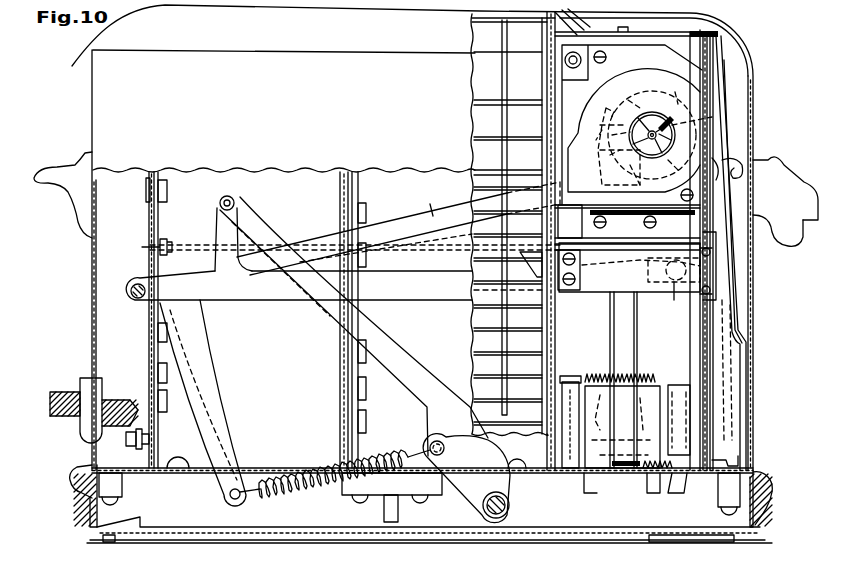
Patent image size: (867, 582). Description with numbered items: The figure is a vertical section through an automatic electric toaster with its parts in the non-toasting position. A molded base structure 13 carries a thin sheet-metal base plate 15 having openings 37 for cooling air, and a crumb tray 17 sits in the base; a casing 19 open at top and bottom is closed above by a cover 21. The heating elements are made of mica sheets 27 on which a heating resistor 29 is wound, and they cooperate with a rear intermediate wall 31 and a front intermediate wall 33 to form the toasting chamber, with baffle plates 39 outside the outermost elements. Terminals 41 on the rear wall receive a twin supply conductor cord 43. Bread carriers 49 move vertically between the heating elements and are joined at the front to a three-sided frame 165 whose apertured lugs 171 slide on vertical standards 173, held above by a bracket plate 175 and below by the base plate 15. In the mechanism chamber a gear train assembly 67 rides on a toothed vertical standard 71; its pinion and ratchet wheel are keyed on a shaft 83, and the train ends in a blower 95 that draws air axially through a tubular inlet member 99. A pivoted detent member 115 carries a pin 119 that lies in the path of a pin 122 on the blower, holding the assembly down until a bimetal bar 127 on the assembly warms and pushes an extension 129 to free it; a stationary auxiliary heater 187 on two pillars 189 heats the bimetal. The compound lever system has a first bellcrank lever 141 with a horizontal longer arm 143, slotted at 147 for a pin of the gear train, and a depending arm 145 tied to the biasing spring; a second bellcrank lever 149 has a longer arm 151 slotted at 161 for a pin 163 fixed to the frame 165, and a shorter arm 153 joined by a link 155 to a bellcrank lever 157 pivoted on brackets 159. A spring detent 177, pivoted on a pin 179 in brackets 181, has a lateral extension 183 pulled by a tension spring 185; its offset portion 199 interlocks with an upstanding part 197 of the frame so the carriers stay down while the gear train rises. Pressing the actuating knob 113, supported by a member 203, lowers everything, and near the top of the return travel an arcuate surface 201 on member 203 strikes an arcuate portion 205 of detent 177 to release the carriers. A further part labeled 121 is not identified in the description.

The base structure 13 is at (88, 503).
The base plate 15 is at (135, 475).
The crumb tray 17 is at (245, 541).
The casing 19 is at (100, 90).
The cover 21 is at (402, 237).
The sheets of electric insulating material 27 is at (197, 171).
The heating resistor 29 is at (168, 187).
The rear intermediate wall 31 is at (148, 192).
The front intermediate wall 33 is at (550, 80).
The openings 37 is at (200, 474).
The baffle plates 39 is at (548, 62).
The terminals 41 is at (125, 443).
The twin supply conductor cord 43 is at (57, 389).
The bread carriers 49 is at (386, 252).
The gear train assembly 67 is at (550, 105).
The vertical standard 71 is at (609, 331).
The shaft 83 is at (665, 126).
The blower 95 is at (722, 84).
The tubular inlet member 99 is at (658, 134).
The actuating knob 113 is at (778, 218).
The detent member 115 is at (588, 200).
The pin 119 is at (606, 107).
The mounting plate 121 is at (627, 221).
The pin 122 is at (654, 93).
The bimetallic element 127 is at (630, 238).
The extension 129 is at (610, 190).
The first bellcrank lever 141 is at (383, 212).
The longer arm 143 is at (440, 207).
The depending arm 145 is at (215, 383).
The slot 147 is at (492, 185).
The second bellcrank lever 149 is at (380, 300).
The longer arm 151 is at (265, 304).
The shorter arm 153 is at (221, 232).
The link 155 is at (423, 378).
The bellcrank lever 157 is at (507, 488).
The brackets 159 is at (473, 491).
The slot 161 is at (652, 290).
The pin 163 is at (674, 300).
The frame 165 is at (600, 295).
The apertured lugs 171 is at (712, 252).
The vertical standards 173 is at (699, 346).
The bracket plate 175 is at (700, 26).
The detent member 177 is at (728, 102).
The pin 179 is at (716, 48).
The brackets 181 is at (712, 34).
The lateral extension 183 is at (740, 464).
The tension spring 185 is at (650, 477).
The auxiliary heater 187 is at (589, 376).
The pillars 189 is at (700, 392).
The upstanding part 197 is at (718, 234).
The offset portion 199 is at (742, 336).
The arcuate surface 201 is at (716, 166).
The member 203 is at (742, 196).
The arcuate portion 205 is at (744, 163).